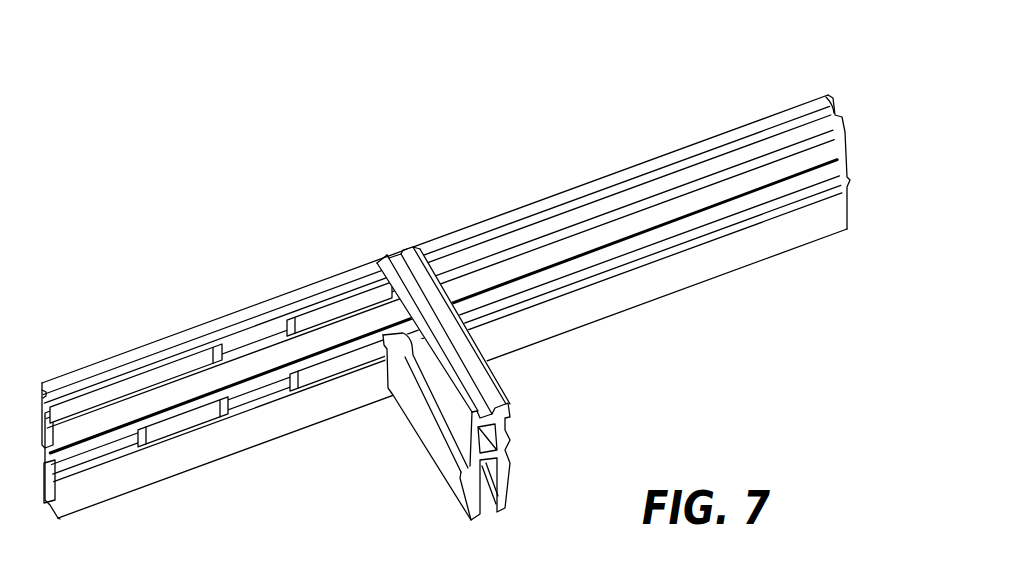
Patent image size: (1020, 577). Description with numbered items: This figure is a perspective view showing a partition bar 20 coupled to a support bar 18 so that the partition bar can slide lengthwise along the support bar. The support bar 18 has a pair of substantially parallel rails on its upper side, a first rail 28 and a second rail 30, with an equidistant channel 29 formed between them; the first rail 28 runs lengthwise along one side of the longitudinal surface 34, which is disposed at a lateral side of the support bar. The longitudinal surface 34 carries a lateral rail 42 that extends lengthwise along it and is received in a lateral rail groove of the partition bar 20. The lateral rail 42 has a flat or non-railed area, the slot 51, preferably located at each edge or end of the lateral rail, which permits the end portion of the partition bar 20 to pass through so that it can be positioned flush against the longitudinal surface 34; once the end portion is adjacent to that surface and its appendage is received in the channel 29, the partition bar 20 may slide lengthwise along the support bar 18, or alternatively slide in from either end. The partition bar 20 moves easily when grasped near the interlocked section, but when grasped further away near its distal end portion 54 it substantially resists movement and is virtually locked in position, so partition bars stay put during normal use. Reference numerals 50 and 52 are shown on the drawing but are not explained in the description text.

The support bar 18 is at (466, 297).
The partition bar 20 is at (501, 384).
The first rail 28 is at (509, 243).
The channel 29 is at (836, 98).
The second rail 30 is at (571, 183).
The longitudinal surface 34 is at (672, 268).
The lateral rail 42 is at (743, 222).
The front face of rail 50 is at (265, 393).
The slot 51 is at (115, 473).
The lugs / slot on rail face 52 is at (250, 340).
The distal end portion 54 is at (503, 458).